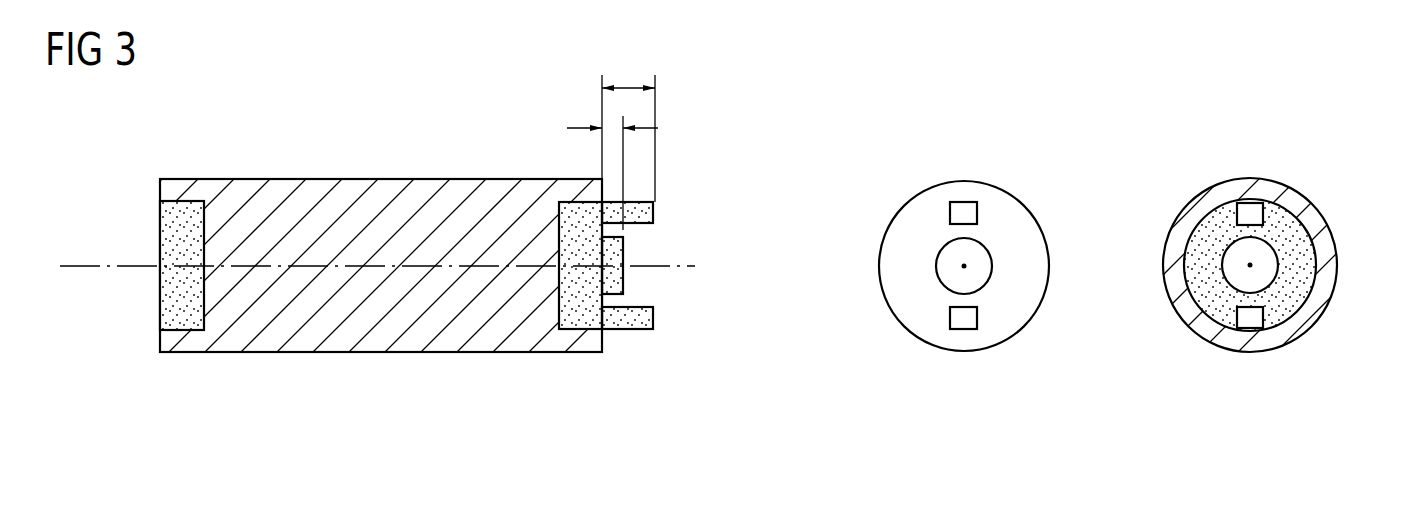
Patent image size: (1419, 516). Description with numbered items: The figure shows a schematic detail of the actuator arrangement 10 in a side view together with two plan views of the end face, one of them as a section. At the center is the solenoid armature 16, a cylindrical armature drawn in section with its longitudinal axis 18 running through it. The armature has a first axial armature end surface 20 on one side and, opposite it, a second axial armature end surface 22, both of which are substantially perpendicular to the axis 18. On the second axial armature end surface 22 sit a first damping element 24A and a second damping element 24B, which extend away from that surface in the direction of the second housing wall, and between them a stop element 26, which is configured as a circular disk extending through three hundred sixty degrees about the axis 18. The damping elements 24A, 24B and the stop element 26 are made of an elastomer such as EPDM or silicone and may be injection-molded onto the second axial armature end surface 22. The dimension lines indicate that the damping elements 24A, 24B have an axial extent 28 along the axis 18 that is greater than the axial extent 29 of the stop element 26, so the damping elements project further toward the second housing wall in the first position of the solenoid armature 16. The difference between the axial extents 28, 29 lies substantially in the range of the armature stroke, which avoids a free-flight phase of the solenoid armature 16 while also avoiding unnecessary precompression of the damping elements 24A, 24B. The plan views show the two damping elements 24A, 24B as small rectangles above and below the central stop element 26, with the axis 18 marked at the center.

The actuator arrangement 10 is at (300, 128).
The solenoid armature 16 is at (352, 334).
The axis 18 is at (80, 266).
The first axial armature end surface 20 is at (159, 333).
The second axial armature end surface 22 is at (616, 334).
The first damping element 24A is at (640, 213).
The second damping element 24B is at (640, 318).
The stop element 26 is at (613, 275).
The axial extent of the damping elements 28 is at (628, 88).
The axial extent of the stop element 29 is at (567, 128).